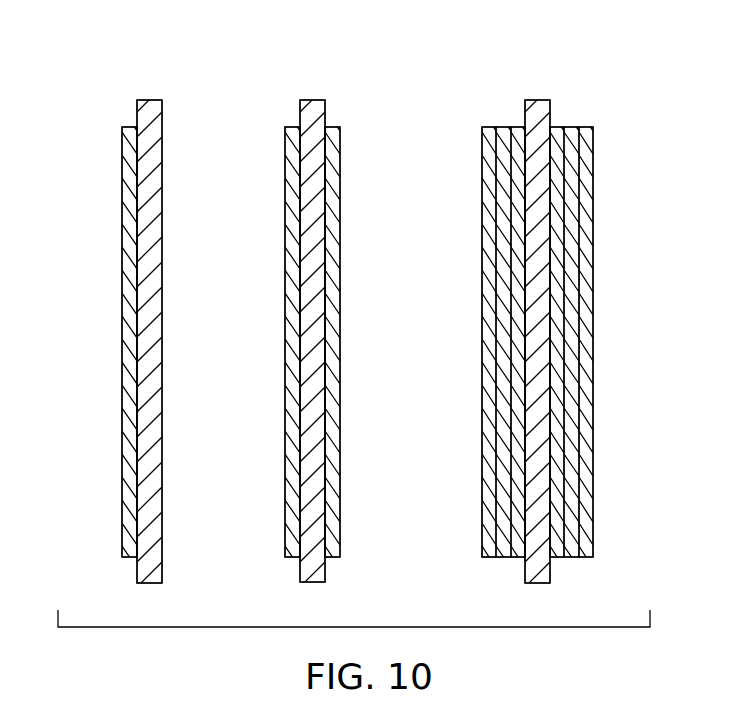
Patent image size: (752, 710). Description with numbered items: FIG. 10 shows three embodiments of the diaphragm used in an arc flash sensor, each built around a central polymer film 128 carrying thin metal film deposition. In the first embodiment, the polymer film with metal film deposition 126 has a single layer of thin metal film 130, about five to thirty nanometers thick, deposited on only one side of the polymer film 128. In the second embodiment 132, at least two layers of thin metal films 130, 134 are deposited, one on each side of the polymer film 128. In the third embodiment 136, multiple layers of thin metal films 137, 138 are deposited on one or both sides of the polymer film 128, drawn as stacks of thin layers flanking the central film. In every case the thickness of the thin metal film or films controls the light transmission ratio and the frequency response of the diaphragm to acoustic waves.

The polymer film with metal film deposition 126 is at (165, 83).
The polymer film 128 is at (155, 585).
The thin metal film 130 is at (134, 559).
The two-sided metal film embodiment 132 is at (327, 83).
The thin metal film 134 is at (339, 540).
The multiple-layer metal film embodiment 136 is at (552, 85).
The multiple layers of thin metal films 137 is at (518, 559).
The multiple layers of thin metal films 138 is at (557, 559).